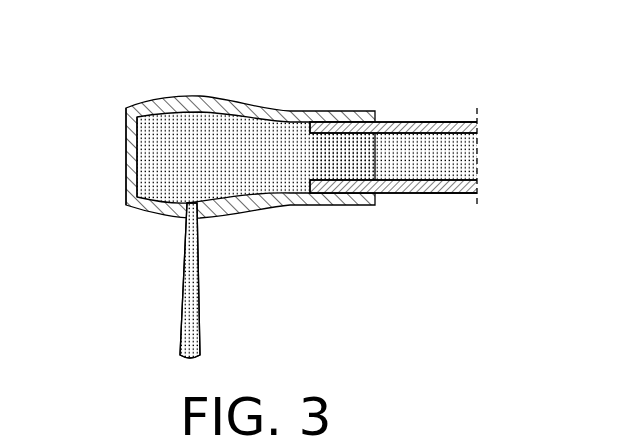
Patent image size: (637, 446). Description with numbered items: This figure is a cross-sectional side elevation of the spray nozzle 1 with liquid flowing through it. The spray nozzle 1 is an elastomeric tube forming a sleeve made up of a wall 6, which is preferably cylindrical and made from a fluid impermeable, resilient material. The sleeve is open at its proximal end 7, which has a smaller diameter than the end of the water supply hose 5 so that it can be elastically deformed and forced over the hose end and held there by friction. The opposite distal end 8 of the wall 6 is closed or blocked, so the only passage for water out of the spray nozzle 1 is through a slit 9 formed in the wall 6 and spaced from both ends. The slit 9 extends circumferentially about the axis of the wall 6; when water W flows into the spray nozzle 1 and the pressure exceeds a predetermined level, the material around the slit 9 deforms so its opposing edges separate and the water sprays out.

The spray nozzle 1 is at (133, 94).
The water W is at (195, 118).
The water supply hose 5 is at (447, 120).
The wall 6 is at (252, 212).
The proximal end 7 is at (375, 117).
The distal end 8 is at (125, 170).
The slit 9 is at (178, 213).